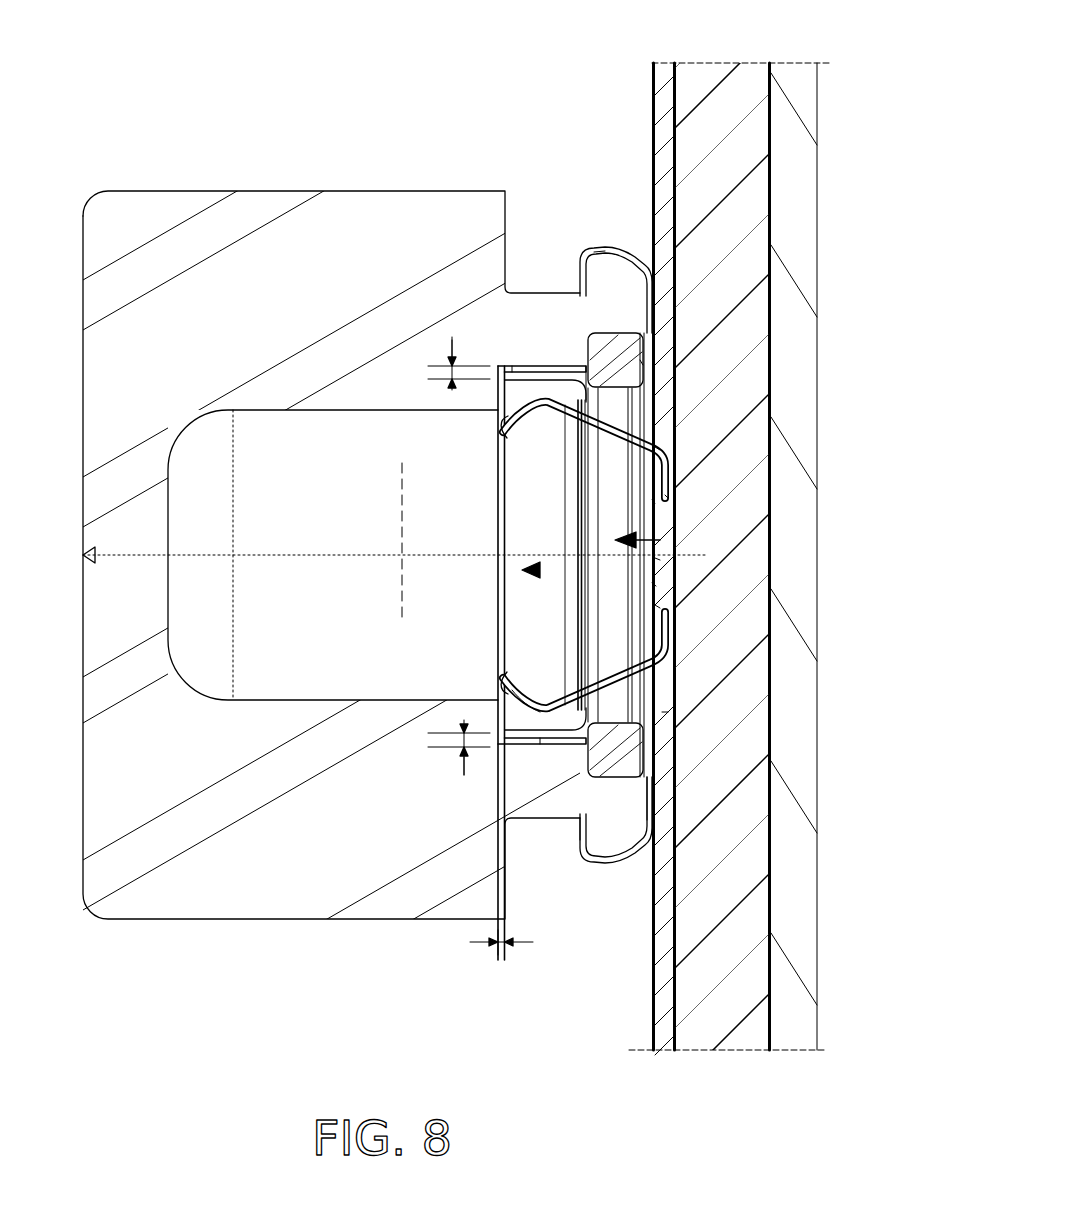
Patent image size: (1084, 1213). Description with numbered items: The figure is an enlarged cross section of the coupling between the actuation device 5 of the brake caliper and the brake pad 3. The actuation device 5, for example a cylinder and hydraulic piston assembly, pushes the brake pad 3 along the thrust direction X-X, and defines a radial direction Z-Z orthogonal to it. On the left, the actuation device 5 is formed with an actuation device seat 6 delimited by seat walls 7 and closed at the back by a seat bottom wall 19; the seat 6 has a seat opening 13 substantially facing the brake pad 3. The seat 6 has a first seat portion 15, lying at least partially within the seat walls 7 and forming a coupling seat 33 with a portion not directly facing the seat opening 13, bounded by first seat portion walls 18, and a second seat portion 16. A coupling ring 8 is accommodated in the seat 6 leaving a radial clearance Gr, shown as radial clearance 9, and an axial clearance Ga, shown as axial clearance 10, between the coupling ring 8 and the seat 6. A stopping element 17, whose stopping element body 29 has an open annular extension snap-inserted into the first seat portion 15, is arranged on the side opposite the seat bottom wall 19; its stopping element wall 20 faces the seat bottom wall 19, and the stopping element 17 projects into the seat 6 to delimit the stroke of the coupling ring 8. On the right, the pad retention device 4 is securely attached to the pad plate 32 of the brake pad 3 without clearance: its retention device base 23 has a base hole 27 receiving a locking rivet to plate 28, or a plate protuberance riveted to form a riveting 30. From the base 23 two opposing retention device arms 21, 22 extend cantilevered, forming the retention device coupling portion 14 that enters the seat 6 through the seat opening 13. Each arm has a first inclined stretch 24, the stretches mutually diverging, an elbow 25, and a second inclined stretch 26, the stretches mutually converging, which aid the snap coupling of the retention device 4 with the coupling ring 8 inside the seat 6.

The brake pad 3 is at (725, 1048).
The pad retention device 4 is at (652, 583).
The actuation device 5 is at (292, 864).
The actuation device seat 6 is at (497, 573).
The seat walls 7 is at (583, 825).
The coupling ring 8 is at (545, 378).
The coupling ring radial clearance 9 is at (455, 345).
The coupling ring axial clearance 10 is at (512, 943).
The seat opening 13 is at (660, 542).
The retention device coupling portion 14 is at (650, 422).
The first seat portion 15 is at (653, 820).
The second seat portion 16 is at (585, 366).
The stopping element 17 is at (614, 335).
The first seat portion walls 18 is at (612, 775).
The seat bottom wall 19 is at (498, 405).
The stopping element wall 20 is at (592, 265).
The retention device arm 21 is at (540, 675).
The retention device arm 22 is at (530, 470).
The retention device base 23 is at (667, 495).
The first inclined stretch 24 is at (658, 448).
The elbow 25 is at (512, 366).
The second inclined stretch 26 is at (522, 425).
The base hole 27 is at (655, 605).
The locking rivet to plate 28 is at (655, 558).
The stopping element body 29 is at (640, 362).
The riveting 30 is at (652, 500).
The pad plate 32 is at (740, 1000).
The coupling seat 33 is at (652, 178).
The radial clearance Gr is at (450, 372).
The axial clearance Ga is at (499, 952).
The thrust direction X-X is at (312, 553).
The radial direction Z-Z is at (402, 463).